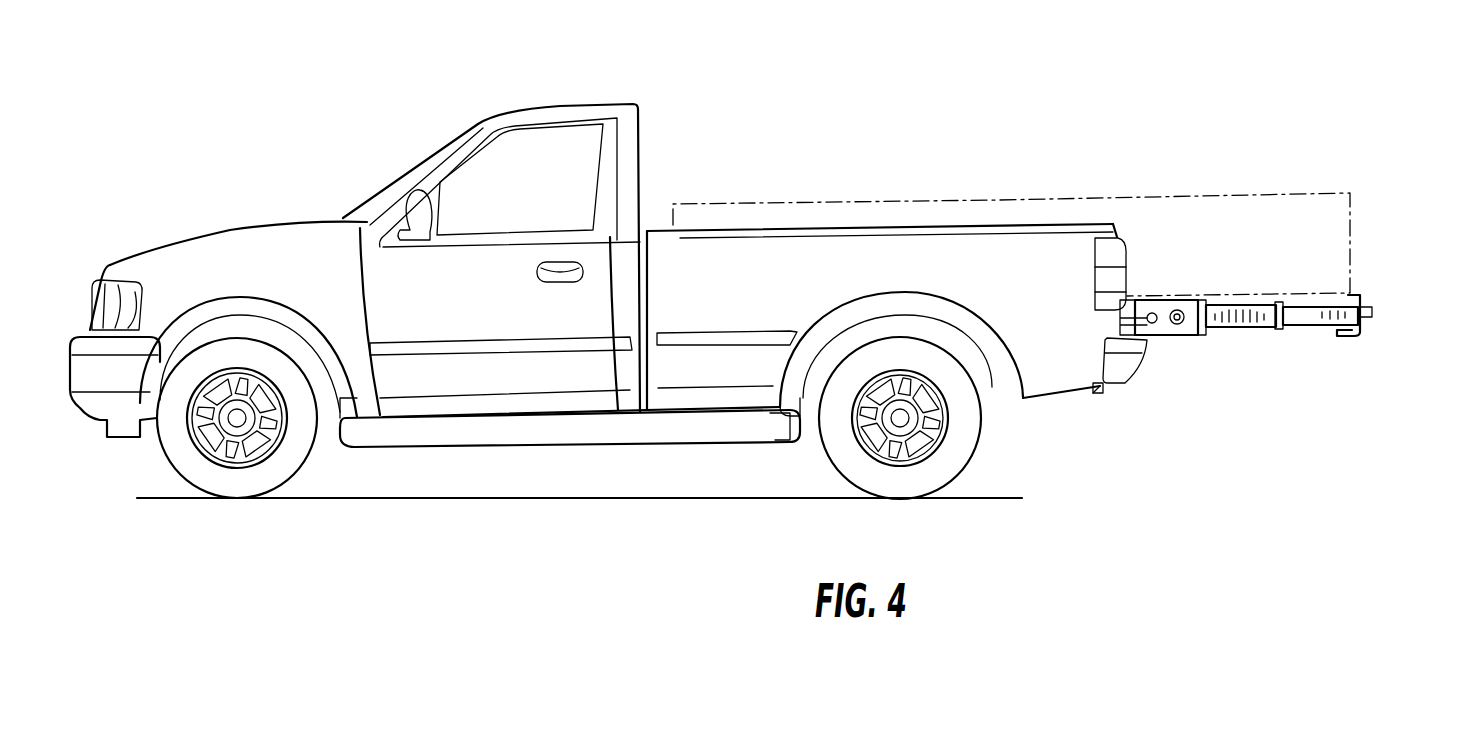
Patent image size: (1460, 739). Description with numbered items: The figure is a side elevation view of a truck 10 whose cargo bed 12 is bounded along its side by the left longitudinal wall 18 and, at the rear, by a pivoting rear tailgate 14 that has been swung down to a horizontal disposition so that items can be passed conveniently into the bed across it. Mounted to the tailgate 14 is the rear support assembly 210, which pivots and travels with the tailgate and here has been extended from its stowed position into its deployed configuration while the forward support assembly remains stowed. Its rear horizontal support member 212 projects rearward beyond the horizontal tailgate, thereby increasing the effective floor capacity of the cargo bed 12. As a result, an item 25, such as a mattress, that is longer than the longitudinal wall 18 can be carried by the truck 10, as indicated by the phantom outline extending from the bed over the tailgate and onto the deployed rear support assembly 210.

The truck 10 is at (233, 122).
The cargo bed 12 is at (797, 230).
The left longitudinal wall 18 is at (1015, 225).
The item 25 is at (1205, 193).
The rear tailgate 14 is at (1157, 336).
The rear support assembly 210 is at (1248, 330).
The rear horizontal support member 212 is at (1366, 298).